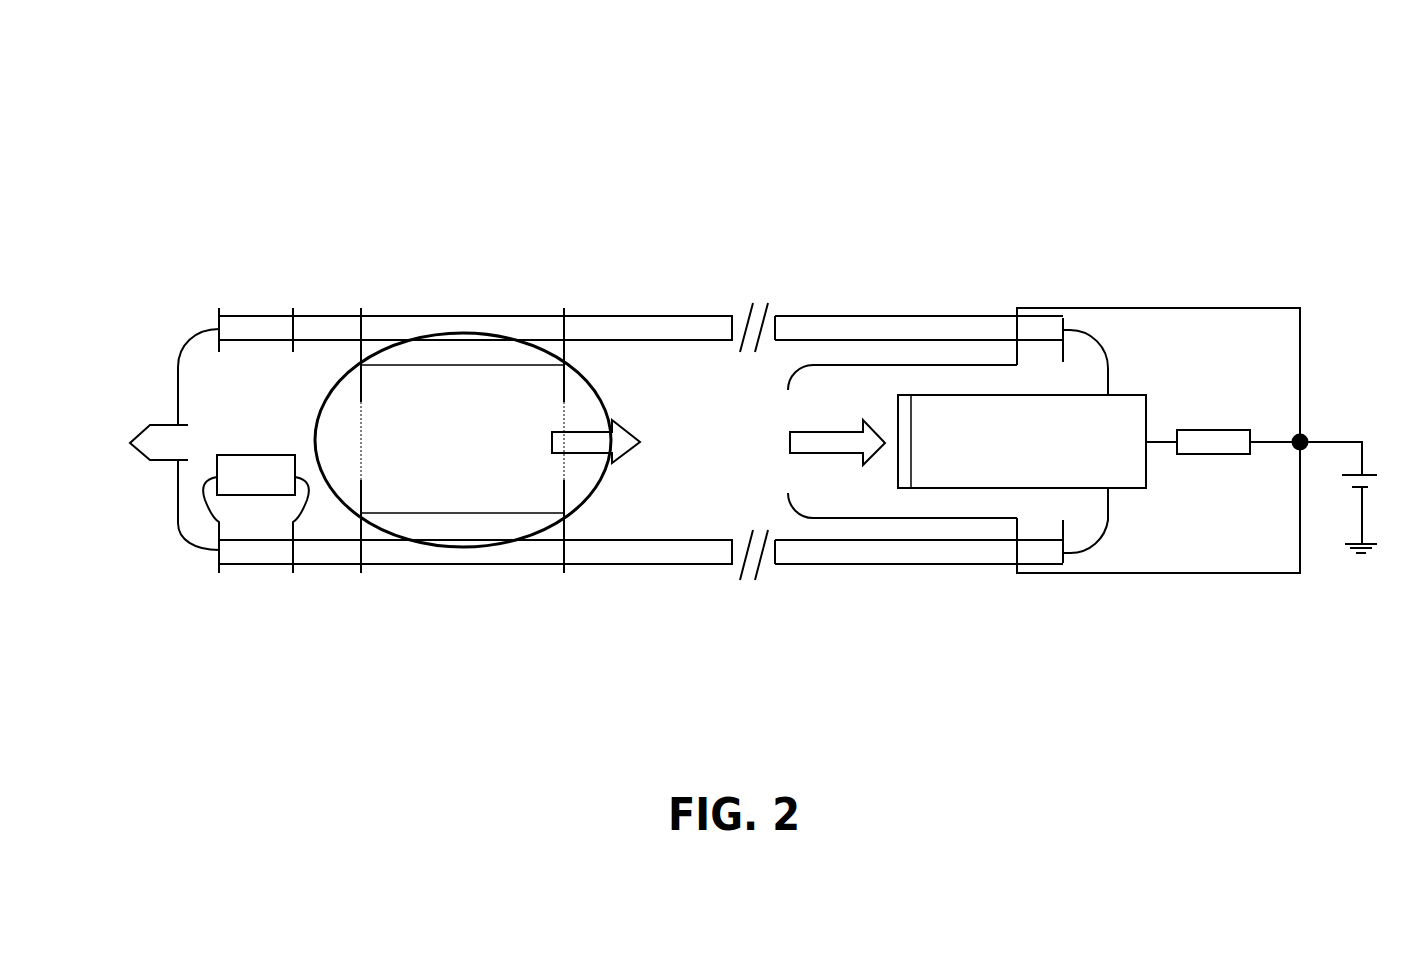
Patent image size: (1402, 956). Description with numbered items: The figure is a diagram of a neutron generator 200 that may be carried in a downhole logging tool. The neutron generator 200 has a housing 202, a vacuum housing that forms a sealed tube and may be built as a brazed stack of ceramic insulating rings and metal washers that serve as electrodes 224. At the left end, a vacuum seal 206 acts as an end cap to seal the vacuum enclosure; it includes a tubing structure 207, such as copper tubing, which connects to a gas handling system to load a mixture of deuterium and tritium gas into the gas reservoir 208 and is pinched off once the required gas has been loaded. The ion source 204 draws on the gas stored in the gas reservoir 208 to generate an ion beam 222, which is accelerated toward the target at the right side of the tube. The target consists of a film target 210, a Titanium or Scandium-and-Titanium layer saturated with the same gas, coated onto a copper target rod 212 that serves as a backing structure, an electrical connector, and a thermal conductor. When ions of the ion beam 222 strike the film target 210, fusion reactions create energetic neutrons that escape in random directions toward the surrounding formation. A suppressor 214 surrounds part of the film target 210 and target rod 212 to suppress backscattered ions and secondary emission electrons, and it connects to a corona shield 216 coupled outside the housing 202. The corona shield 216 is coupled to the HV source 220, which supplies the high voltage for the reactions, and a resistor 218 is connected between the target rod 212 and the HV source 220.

The neutron generator 200 is at (105, 130).
The housing 202 is at (633, 317).
The ion source 204 is at (463, 548).
The vacuum seal 206 is at (178, 318).
The tubing structure 207 is at (153, 460).
The gas reservoir 208 is at (260, 495).
The film target 210 is at (904, 465).
The target rod 212 is at (1022, 470).
The suppressor 214 is at (915, 365).
The corona shield 216 is at (1160, 308).
The resistor 218 is at (1213, 438).
The HV source 220 is at (1345, 428).
The ion beam 222 is at (706, 466).
The electrodes 224 is at (302, 300).